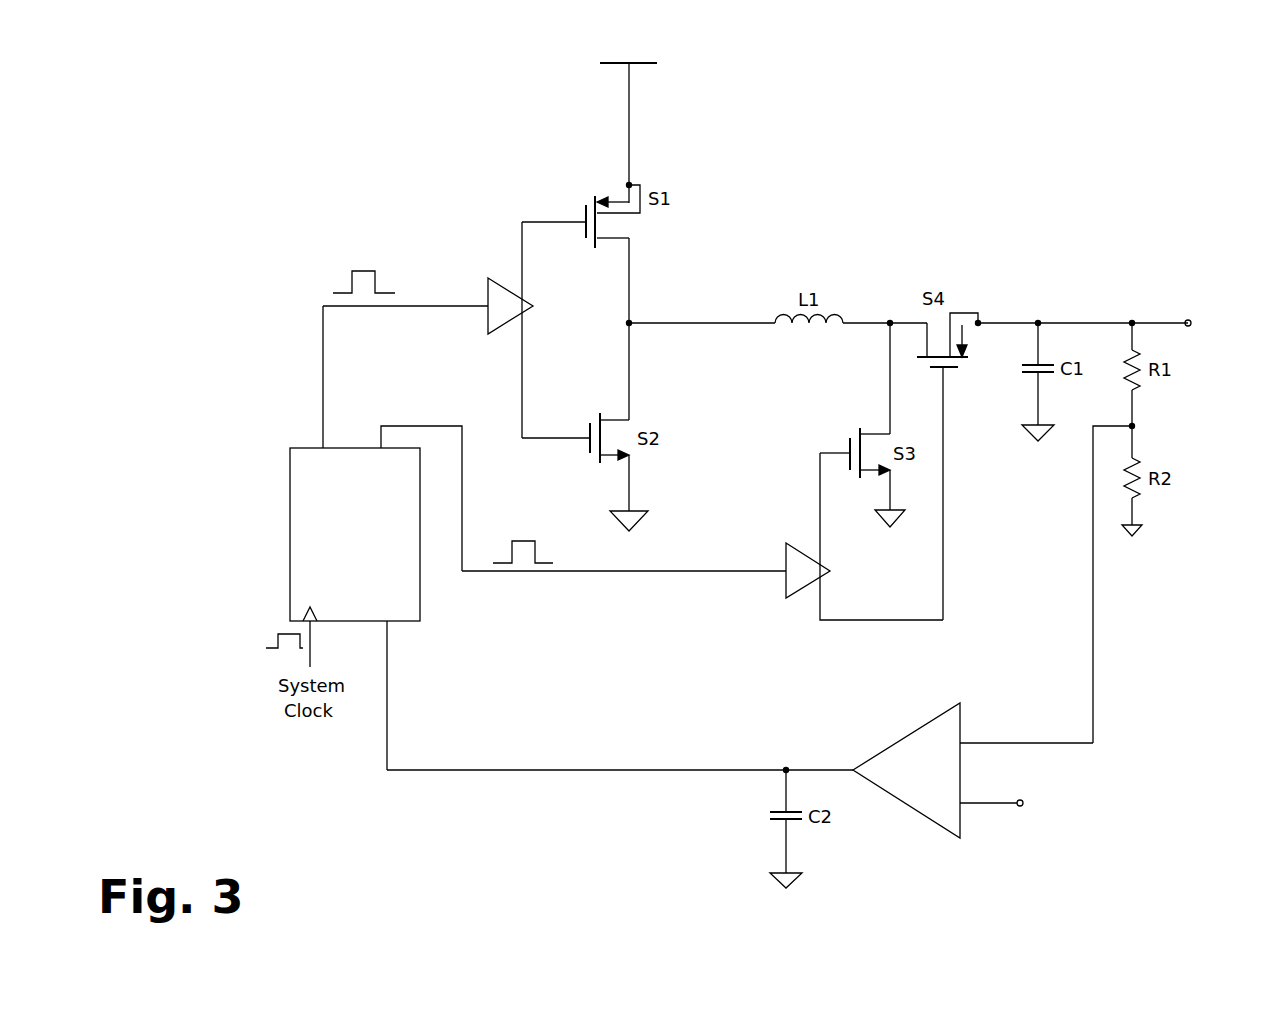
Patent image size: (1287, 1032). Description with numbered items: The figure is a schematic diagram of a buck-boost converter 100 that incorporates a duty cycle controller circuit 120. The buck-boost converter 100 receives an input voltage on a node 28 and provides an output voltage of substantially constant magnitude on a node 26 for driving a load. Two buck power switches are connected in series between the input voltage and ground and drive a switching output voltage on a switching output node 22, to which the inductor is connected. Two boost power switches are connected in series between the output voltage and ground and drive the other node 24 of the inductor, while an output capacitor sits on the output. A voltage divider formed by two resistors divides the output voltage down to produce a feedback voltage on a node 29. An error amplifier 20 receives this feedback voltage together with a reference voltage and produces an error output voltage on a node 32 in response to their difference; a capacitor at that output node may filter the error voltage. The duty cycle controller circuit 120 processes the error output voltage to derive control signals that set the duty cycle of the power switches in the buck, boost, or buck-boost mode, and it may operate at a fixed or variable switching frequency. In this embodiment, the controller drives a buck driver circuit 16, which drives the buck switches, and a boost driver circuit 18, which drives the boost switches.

The buck-boost converter 100 is at (1110, 113).
The node 28 is at (643, 67).
The buck driver circuit 16 is at (488, 323).
The switching output node 22 is at (628, 324).
The node 24 is at (889, 326).
The node 26 is at (1133, 321).
The node 29 is at (1136, 426).
The duty cycle controller circuit 120 is at (289, 470).
The boost driver circuit 18 is at (782, 587).
The node 32 is at (710, 772).
The error amplifier 20 is at (902, 796).